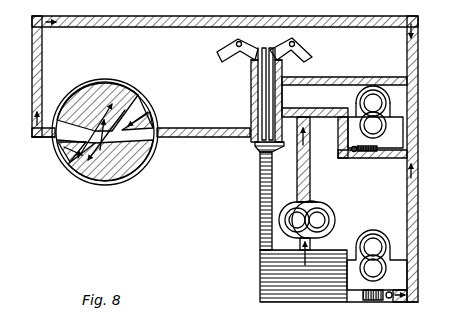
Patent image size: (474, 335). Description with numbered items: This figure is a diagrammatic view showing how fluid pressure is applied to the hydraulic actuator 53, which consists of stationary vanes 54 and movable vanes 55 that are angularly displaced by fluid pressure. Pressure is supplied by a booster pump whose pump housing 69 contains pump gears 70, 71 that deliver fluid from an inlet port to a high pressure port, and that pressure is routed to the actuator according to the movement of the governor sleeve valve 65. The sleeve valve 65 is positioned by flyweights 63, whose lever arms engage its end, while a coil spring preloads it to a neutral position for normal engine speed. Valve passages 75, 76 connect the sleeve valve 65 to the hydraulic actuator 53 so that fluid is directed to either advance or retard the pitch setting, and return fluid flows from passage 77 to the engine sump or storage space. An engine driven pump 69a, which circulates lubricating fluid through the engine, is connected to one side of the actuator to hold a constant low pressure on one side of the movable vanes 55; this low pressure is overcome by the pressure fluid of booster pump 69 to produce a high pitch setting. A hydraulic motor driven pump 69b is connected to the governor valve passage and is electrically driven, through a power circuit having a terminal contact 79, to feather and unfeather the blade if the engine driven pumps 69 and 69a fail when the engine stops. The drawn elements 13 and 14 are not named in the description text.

The chamber 13 is at (282, 110).
The spring valve 14 is at (358, 153).
The hydraulic actuator 53 is at (104, 78).
The stationary vanes 54 is at (153, 118).
The movable vanes 55 is at (86, 178).
The flyweights 63 is at (312, 52).
The sleeve valve 65 is at (250, 82).
The pump housing 69 is at (318, 226).
The engine driven pump 69a is at (374, 236).
The hydraulic motor driven pump 69b is at (384, 100).
The pump gear 70 is at (285, 220).
The pump gear 71 is at (325, 216).
The valve passage 75 is at (192, 128).
The valve passage 76 is at (152, 27).
The return passage 77 is at (262, 172).
The terminal contact 79 is at (440, 159).